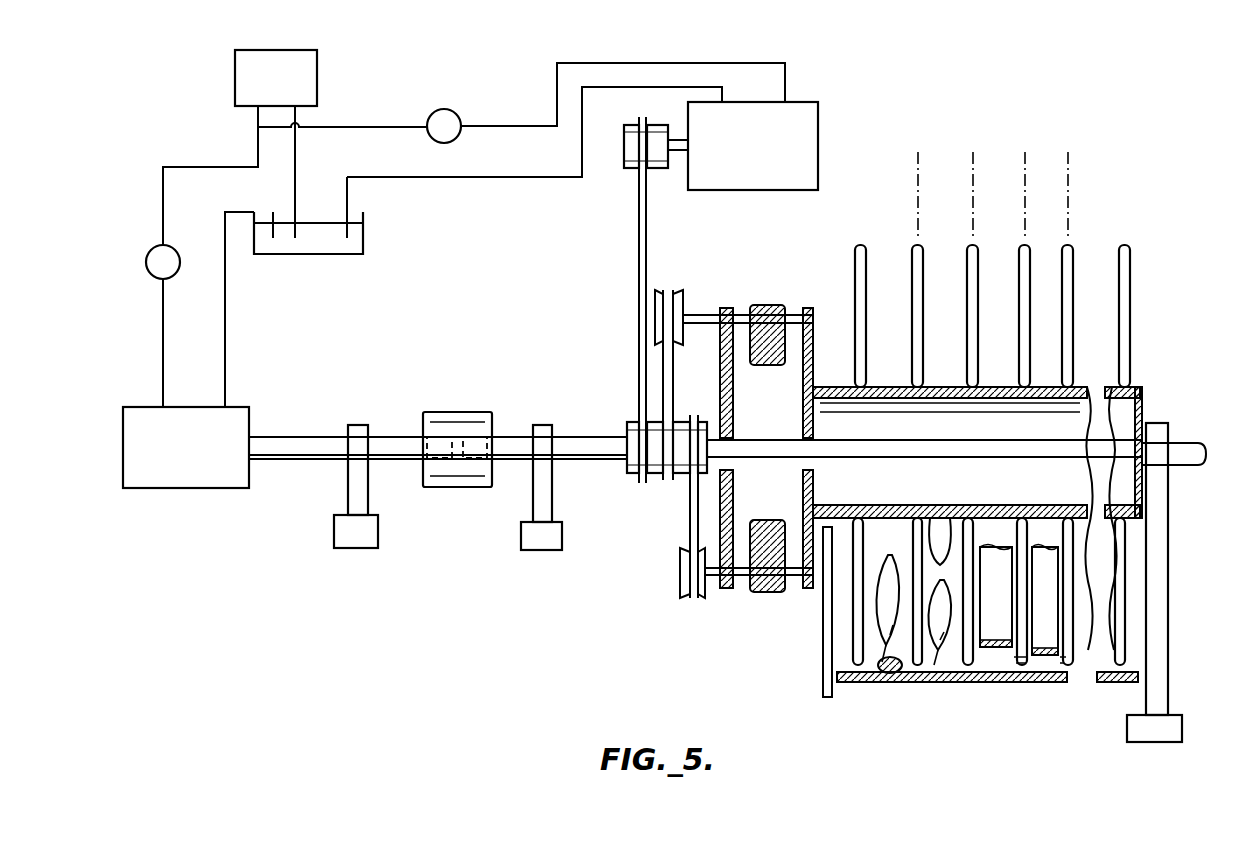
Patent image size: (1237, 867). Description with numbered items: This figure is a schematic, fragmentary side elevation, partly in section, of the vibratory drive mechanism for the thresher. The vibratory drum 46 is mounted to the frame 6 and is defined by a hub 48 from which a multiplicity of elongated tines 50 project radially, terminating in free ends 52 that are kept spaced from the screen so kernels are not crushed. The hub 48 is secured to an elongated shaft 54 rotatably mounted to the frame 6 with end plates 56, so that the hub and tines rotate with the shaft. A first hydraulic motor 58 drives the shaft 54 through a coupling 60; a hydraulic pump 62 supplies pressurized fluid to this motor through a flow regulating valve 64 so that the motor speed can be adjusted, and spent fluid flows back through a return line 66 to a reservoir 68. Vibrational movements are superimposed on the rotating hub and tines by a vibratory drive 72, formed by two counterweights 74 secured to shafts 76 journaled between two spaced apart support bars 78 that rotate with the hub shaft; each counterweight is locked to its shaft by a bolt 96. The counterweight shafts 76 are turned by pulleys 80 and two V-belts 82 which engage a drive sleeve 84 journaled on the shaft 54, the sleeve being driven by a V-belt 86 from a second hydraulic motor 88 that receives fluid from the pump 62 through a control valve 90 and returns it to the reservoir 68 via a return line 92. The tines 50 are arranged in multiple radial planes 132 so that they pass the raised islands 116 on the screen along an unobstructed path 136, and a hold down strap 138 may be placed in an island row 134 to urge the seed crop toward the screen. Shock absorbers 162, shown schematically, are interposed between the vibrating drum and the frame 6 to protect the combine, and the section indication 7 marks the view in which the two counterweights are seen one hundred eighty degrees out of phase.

The frame 6 is at (368, 495).
The section line 7 is at (457, 390).
The vibratory drum 46 is at (1080, 204).
The hub 48 is at (1140, 385).
The tines 50 is at (967, 312).
The free ends 52 is at (1025, 243).
The shaft 54 is at (292, 437).
The end plates 56 is at (818, 430).
The first hydraulic motor 58 is at (123, 435).
The coupling 60 is at (470, 412).
The hydraulic pump 62 is at (317, 63).
The flow regulating valve 64 is at (146, 262).
The return line 66 is at (225, 290).
The reservoir 68 is at (363, 241).
The vibratory drive 72 is at (295, 160).
The counterweights 74 is at (770, 303).
The shafts 76 is at (803, 310).
The support bars 78 is at (733, 380).
The pulleys 80 is at (683, 300).
The V-belts 82 is at (675, 372).
The drive sleeve 84 is at (652, 476).
The V-belt 86 is at (650, 247).
The second hydraulic motor 88 is at (818, 158).
The control valve 90 is at (455, 113).
The return line 92 is at (487, 180).
The bolt 96 is at (765, 305).
The raised islands 116 is at (930, 550).
The radial planes 132 is at (918, 160).
The island row 134 is at (889, 605).
The unobstructed path 136 is at (928, 650).
The hold down strap 138 is at (1040, 660).
The shock absorbers 162 is at (350, 548).